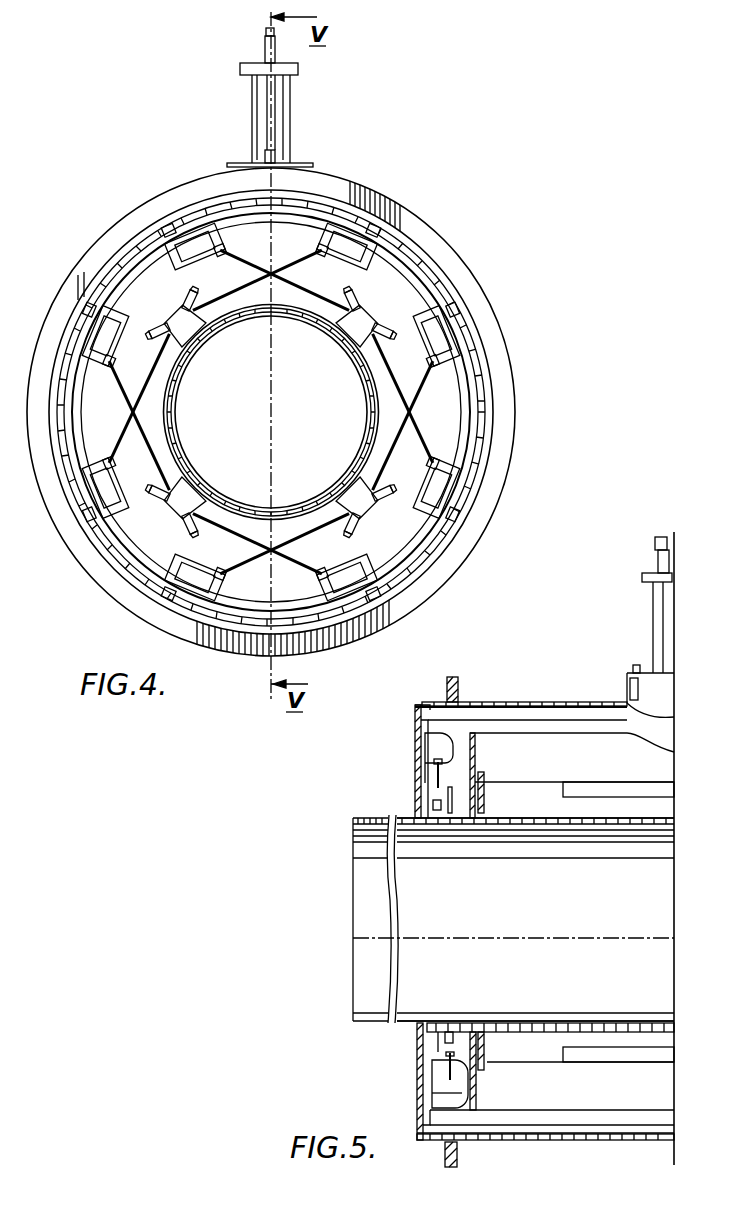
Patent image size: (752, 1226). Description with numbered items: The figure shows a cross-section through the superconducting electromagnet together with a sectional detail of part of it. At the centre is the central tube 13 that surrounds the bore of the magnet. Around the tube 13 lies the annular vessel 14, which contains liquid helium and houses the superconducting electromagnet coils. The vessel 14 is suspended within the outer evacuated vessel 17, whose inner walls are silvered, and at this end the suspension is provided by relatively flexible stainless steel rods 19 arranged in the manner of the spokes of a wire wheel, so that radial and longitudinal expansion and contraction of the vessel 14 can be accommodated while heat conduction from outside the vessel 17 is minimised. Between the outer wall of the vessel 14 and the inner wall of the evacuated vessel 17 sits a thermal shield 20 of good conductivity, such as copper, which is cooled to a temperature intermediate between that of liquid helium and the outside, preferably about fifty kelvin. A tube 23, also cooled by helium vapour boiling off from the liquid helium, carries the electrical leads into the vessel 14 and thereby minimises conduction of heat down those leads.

In FIG. 4, the central tube 13 is at (167, 512).
In FIG. 5, the central tube 13 is at (573, 820).
In FIG. 4, the annular vessel 14 is at (408, 286).
In FIG. 5, the annular vessel 14 is at (457, 755).
In FIG. 4, the evacuated vessel 17 is at (353, 210).
In FIG. 5, the evacuated vessel 17 is at (443, 702).
In FIG. 4, the stainless steel rods 19 is at (388, 489).
In FIG. 5, the stainless steel rods 19 is at (445, 1075).
In FIG. 4, the thermal shield 20 is at (313, 210).
In FIG. 5, the thermal shield 20 is at (530, 733).
In FIG. 4, the tube 23 is at (252, 112).
In FIG. 5, the tube 23 is at (660, 607).